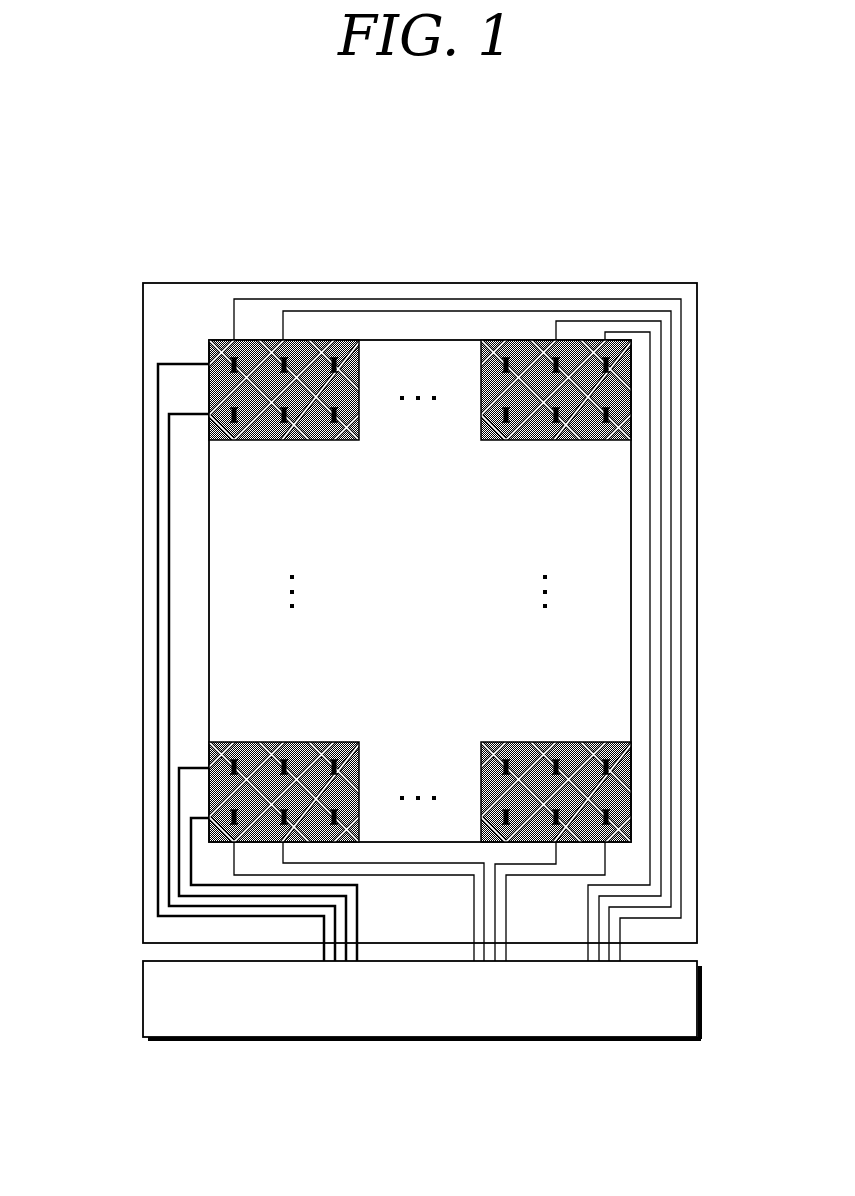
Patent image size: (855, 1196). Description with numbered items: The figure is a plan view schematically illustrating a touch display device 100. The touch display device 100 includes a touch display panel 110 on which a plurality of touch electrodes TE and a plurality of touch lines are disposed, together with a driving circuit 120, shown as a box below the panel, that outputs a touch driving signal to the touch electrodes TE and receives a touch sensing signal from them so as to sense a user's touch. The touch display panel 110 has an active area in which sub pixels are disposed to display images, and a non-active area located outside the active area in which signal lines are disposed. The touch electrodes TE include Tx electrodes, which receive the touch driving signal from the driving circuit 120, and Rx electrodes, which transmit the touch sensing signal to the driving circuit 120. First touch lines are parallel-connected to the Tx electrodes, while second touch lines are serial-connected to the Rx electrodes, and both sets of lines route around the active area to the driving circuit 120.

The touch display device 100 is at (139, 158).
The touch display panel 110 is at (288, 283).
The driving circuit 120 is at (452, 1010).
The touch electrodes TE is at (510, 347).